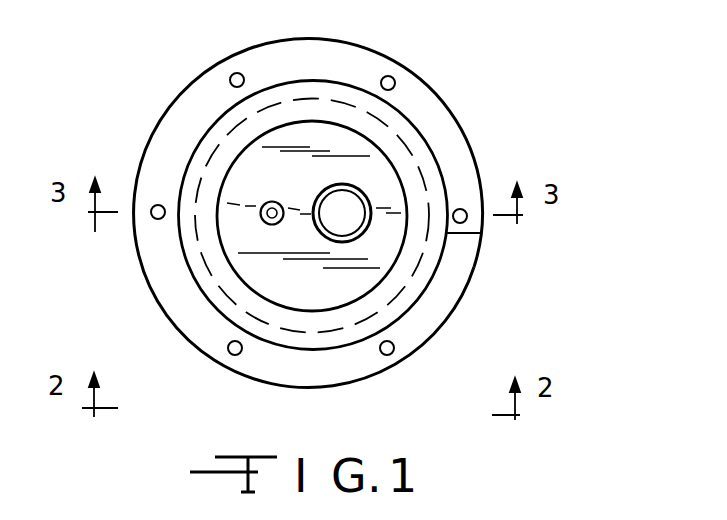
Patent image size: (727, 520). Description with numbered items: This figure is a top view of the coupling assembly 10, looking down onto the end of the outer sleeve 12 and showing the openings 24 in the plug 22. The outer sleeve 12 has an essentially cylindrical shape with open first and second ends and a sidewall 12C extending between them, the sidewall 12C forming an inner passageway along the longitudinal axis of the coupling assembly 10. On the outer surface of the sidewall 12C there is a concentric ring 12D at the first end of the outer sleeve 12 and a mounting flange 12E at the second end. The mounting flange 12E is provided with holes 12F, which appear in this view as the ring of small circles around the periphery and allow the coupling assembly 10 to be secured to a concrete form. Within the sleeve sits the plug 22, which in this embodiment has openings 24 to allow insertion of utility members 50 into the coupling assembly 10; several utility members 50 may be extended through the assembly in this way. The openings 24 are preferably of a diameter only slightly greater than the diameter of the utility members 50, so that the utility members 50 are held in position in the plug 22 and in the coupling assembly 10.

The coupling assembly 10 is at (437, 68).
The outer sleeve 12 is at (448, 110).
The sidewall 12C is at (424, 288).
The concentric ring 12D is at (482, 233).
The mounting flange 12E is at (475, 266).
The holes 12F is at (395, 347).
The plug 22 is at (302, 135).
The openings 24 is at (258, 220).
The utility members 50 is at (343, 243).